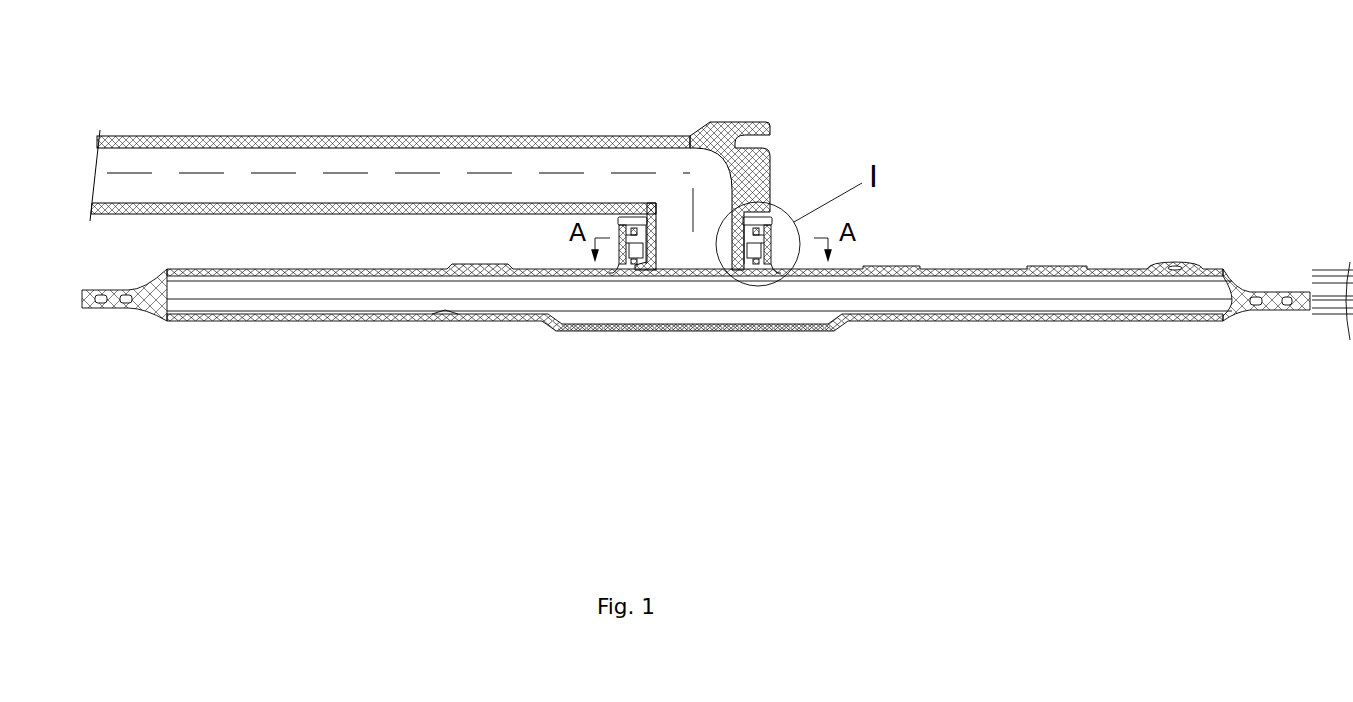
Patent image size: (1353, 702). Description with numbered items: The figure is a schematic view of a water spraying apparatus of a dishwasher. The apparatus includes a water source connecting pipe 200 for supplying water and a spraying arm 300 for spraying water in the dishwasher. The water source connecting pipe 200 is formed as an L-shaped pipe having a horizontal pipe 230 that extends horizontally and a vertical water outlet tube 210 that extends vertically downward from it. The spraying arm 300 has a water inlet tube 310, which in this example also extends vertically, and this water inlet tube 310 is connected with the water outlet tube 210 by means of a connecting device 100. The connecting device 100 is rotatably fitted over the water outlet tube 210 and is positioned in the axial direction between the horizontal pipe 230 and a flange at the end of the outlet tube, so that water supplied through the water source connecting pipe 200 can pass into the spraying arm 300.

The connecting device 100 is at (767, 205).
The water source connecting pipe 200 is at (711, 121).
The water outlet tube 210 is at (650, 217).
The horizontal pipe 230 is at (535, 165).
The spraying arm 300 is at (1245, 300).
The water inlet tube 310 is at (624, 265).